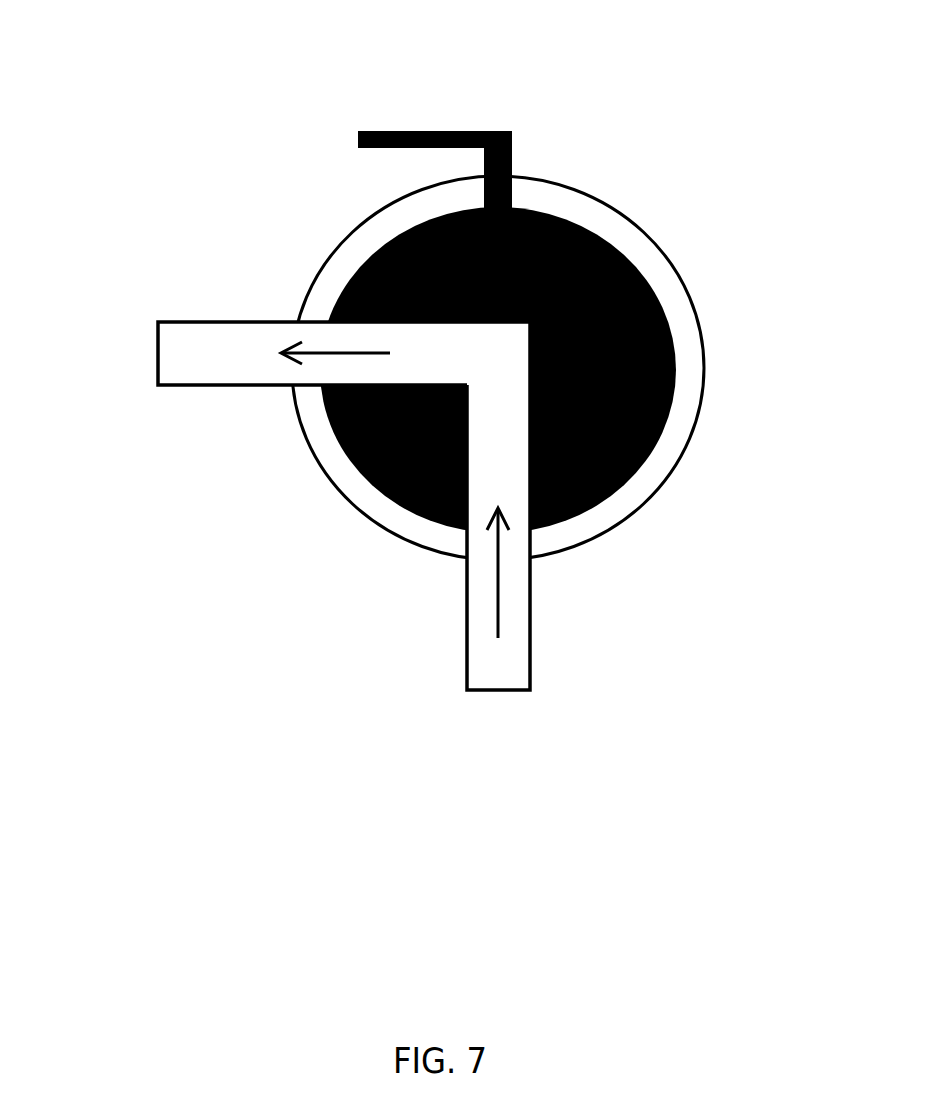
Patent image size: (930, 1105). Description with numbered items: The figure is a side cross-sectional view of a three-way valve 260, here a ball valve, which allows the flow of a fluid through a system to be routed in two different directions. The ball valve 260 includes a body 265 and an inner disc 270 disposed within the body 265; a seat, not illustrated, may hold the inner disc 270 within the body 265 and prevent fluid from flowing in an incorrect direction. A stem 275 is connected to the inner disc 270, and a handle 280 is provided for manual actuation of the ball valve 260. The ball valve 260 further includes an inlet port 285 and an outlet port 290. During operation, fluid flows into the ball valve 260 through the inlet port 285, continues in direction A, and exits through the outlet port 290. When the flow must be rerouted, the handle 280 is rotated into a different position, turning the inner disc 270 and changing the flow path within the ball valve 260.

The three-way valve 260 is at (109, 26).
The body 265 is at (643, 230).
The inner disc 270 is at (643, 467).
The stem 275 is at (513, 173).
The handle 280 is at (420, 130).
The inlet port 285 is at (465, 690).
The outlet port 290 is at (170, 320).